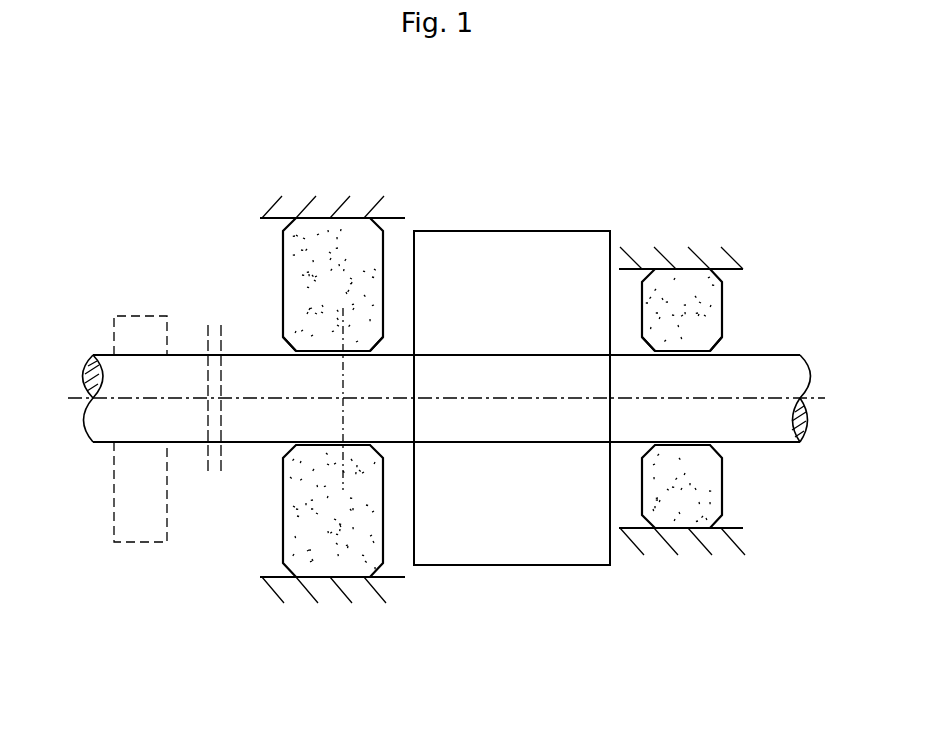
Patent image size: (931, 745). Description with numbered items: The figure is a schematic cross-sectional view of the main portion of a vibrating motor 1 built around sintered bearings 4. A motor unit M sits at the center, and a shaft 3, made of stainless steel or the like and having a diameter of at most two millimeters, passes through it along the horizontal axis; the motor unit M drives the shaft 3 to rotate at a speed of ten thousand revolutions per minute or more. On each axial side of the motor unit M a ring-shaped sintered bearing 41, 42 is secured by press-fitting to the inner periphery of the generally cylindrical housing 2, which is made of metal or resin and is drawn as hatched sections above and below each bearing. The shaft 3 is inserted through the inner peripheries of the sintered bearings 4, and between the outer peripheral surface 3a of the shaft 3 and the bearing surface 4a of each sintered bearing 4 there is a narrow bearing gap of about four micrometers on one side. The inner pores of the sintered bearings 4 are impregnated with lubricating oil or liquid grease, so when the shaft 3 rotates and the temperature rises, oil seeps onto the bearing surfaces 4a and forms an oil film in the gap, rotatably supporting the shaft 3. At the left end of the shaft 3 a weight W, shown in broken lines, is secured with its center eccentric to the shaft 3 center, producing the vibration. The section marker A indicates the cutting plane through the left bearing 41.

The vibrating motor 1 is at (619, 343).
The housing 2 is at (293, 186).
The shaft 3 is at (117, 419).
The outer peripheral surface 3a is at (246, 444).
The sintered bearings 4 is at (453, 379).
The sintered bearing 41 is at (300, 254).
The sintered bearing 42 is at (668, 280).
The bearing surface 4a is at (306, 352).
The weight W is at (121, 312).
The motor unit M is at (512, 398).
The section line A- A is at (343, 482).